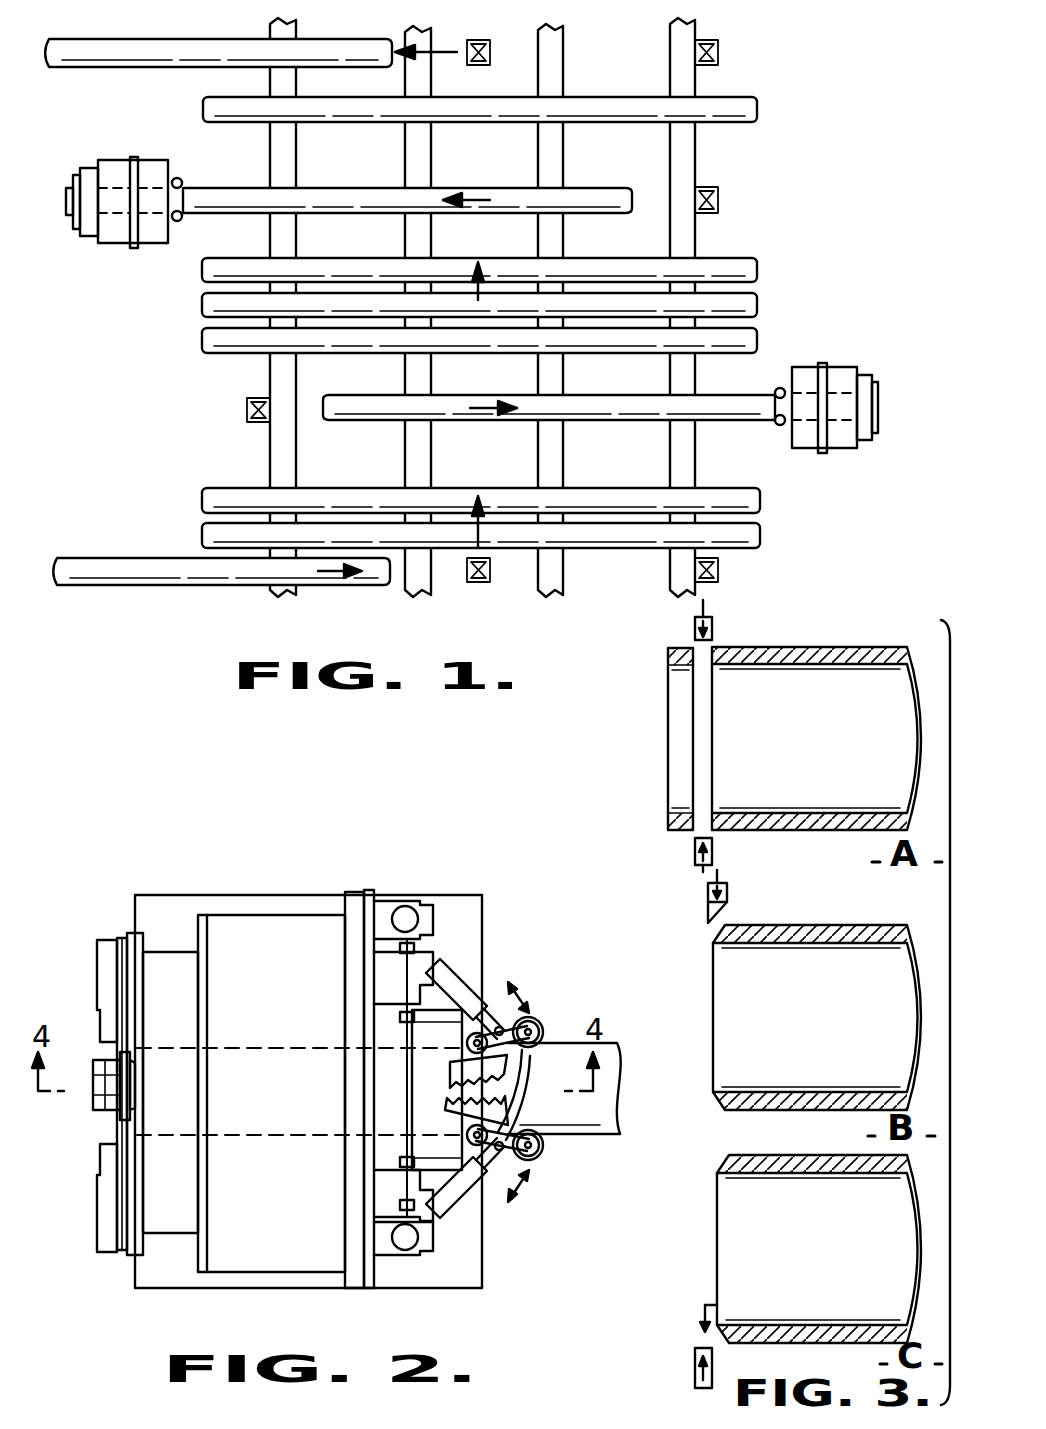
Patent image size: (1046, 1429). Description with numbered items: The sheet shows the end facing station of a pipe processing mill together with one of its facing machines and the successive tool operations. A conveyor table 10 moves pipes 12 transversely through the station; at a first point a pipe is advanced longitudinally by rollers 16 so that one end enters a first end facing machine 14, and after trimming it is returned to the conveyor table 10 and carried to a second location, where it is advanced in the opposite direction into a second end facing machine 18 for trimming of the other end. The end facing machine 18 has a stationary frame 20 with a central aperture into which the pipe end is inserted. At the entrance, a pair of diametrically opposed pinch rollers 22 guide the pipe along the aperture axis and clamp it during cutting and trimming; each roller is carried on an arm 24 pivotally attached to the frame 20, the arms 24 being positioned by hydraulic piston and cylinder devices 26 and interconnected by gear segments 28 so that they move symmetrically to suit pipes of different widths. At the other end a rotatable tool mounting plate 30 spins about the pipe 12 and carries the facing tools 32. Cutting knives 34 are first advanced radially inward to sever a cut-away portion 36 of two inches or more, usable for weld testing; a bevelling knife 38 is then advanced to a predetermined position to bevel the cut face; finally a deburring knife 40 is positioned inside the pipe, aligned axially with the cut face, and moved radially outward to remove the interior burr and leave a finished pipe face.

In FIG. 1, the conveyor table 10 is at (692, 165).
In FIG. 1, the pipe 12 is at (758, 100).
In FIG. 2, the pipe 12 is at (614, 1044).
In FIG. 3, the pipe 12 is at (805, 1156).
In FIG. 1, the first end facing machine 14 is at (840, 367).
In FIG. 1, the rollers 16 is at (247, 412).
In FIG. 1, the second end facing machine 18 is at (117, 160).
In FIG. 2, the second end facing machine 18 is at (258, 862).
In FIG. 2, the stationary frame 20 is at (255, 1262).
In FIG. 2, the pinch rollers 22 is at (548, 1156).
In FIG. 2, the arm 24 is at (505, 1047).
In FIG. 2, the hydraulic piston and cylinder devices 26 is at (456, 1197).
In FIG. 2, the gear segments 28 is at (458, 1078).
In FIG. 2, the rotatable tool mounting plate 30 is at (132, 933).
In FIG. 2, the facing tools 32 is at (104, 1146).
In FIG. 3, the cutting knives 34 is at (712, 628).
In FIG. 3, the cut-away portion 36 is at (678, 740).
In FIG. 3, the bevelling knife 38 is at (727, 893).
In FIG. 3, the deburring knife 40 is at (695, 1368).